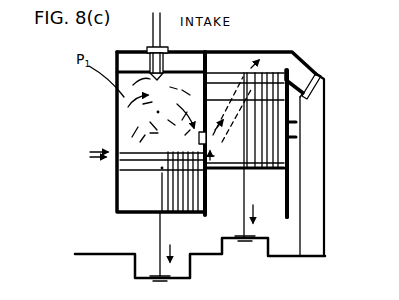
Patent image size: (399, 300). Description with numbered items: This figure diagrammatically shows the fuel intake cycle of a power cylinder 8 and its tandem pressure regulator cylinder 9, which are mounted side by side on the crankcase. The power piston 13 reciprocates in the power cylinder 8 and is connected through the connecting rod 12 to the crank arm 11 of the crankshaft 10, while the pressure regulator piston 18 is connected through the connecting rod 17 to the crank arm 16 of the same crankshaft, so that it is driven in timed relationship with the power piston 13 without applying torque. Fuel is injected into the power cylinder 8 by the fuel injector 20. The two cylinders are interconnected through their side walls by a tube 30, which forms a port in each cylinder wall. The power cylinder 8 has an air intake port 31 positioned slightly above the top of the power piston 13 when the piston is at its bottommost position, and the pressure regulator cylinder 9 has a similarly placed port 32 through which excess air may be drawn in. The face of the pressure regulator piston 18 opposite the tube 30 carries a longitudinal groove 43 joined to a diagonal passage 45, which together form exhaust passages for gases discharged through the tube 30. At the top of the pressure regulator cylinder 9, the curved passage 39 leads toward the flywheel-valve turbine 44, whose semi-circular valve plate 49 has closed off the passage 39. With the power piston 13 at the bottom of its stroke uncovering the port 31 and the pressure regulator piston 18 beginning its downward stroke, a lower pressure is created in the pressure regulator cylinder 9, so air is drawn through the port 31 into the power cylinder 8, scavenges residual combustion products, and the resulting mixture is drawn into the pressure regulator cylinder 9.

The power cylinder 8 is at (116, 113).
The pressure regulator cylinder 9 is at (288, 191).
The crankshaft 10 is at (112, 257).
The crank arm 11 is at (135, 268).
The connecting rod 12 is at (160, 236).
The power piston 13 is at (128, 183).
The crank arm 16 is at (267, 247).
The connecting rod 17 is at (244, 207).
The pressure regulator piston 18 is at (267, 163).
The fuel injector 20 is at (147, 51).
The tube 30 is at (200, 137).
The air intake port 31 is at (136, 158).
The port 32 is at (298, 128).
The passage 39 is at (300, 68).
The longitudinal groove 43 is at (222, 171).
The flywheel-valve turbine 44 is at (322, 149).
The diagonal passage 45 is at (237, 114).
The valve plate 49 is at (318, 81).